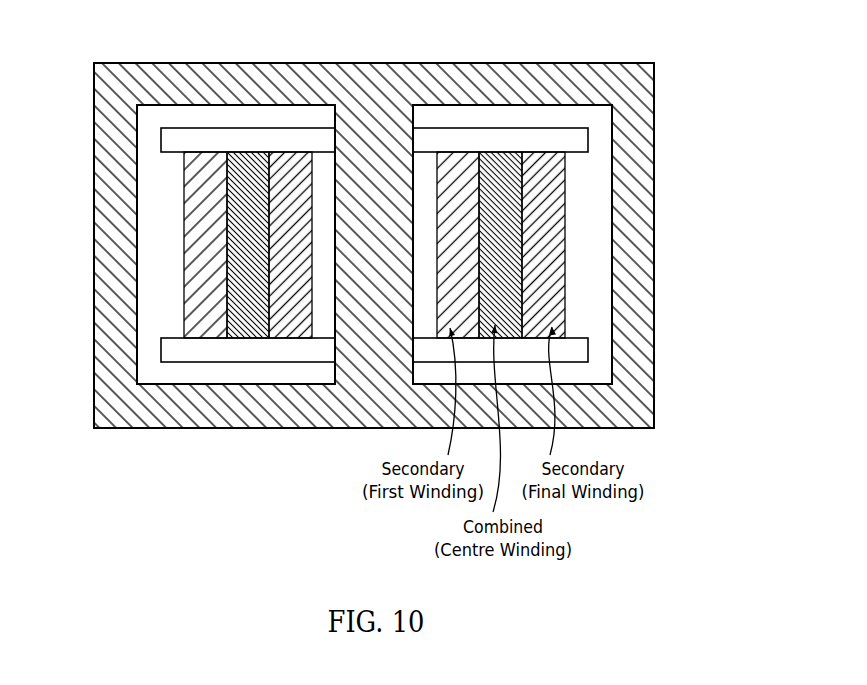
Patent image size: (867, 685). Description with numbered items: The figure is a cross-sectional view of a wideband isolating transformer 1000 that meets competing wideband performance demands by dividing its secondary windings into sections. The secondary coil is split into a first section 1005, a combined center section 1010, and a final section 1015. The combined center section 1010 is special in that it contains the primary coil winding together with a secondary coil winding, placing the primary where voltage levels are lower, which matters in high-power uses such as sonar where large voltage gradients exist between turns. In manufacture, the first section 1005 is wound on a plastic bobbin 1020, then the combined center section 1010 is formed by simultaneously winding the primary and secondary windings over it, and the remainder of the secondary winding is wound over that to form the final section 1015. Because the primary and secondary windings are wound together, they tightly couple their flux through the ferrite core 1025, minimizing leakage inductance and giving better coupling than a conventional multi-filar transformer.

The transformer 1000 is at (358, 36).
The first section 1005 is at (293, 165).
The combined center section 1010 is at (240, 165).
The final section 1015 is at (188, 185).
The plastic bobbin 1020 is at (258, 352).
The ferrite core 1025 is at (339, 409).